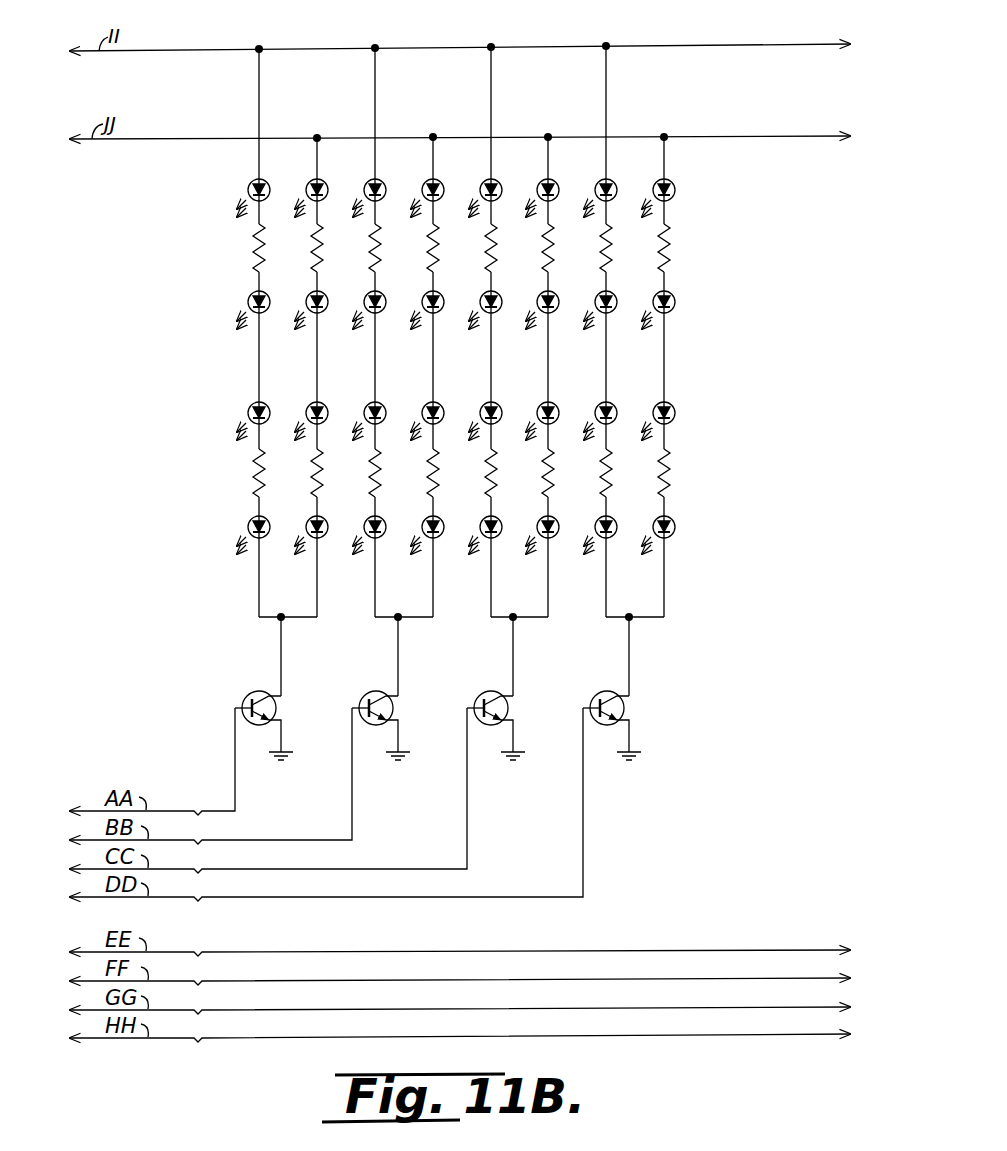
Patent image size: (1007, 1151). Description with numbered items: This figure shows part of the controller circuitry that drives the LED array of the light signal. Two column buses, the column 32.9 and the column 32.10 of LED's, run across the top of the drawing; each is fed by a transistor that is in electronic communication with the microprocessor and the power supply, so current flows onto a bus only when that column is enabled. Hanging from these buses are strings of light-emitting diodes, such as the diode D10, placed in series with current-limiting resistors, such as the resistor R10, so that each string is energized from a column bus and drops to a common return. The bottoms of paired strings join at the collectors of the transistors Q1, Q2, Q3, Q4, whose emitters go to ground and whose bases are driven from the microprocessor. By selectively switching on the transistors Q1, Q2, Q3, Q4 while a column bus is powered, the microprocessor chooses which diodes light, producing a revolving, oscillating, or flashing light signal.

The column of LED's 32.9 is at (598, 165).
The column of LED's 32.10 is at (674, 128).
The transistor Q1 is at (274, 725).
The transistor Q2 is at (391, 725).
The transistor Q3 is at (506, 725).
The transistor Q4 is at (622, 725).
The light emitting diode D10 is at (266, 198).
The resistor R10 is at (273, 248).